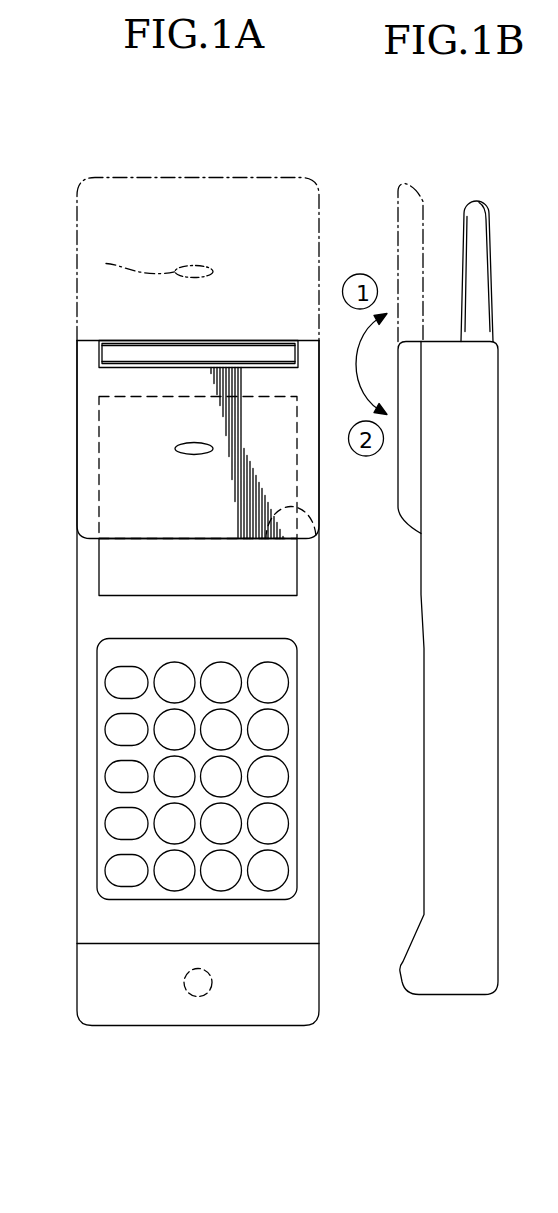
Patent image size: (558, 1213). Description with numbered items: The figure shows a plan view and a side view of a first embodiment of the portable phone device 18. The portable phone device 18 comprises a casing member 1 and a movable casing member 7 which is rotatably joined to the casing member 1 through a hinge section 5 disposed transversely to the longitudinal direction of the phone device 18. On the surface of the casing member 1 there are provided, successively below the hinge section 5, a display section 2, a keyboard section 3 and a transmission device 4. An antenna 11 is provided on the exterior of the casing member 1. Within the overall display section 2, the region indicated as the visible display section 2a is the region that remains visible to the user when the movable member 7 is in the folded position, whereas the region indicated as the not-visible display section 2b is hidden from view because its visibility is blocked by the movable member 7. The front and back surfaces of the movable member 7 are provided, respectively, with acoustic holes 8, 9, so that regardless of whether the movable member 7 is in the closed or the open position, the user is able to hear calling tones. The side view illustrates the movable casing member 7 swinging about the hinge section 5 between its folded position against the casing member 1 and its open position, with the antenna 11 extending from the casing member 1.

In FIG. 1A, the portable phone device 18 is at (93, 167).
In FIG. 1A, the casing member 1 is at (75, 615).
In FIG. 1B, the casing member 1 is at (497, 412).
In FIG. 1A, the movable casing member 7 is at (228, 176).
In FIG. 1B, the movable casing member 7 is at (404, 182).
In FIG. 1A, the acoustic hole 9 is at (105, 262).
In FIG. 1A, the hinge section 5 is at (88, 350).
In FIG. 1A, the acoustic hole 8 is at (175, 447).
In FIG. 1A, the display section 2 is at (90, 556).
In FIG. 1A, the visible display section 2a is at (262, 578).
In FIG. 1A, the not-visible display section 2b is at (322, 527).
In FIG. 1A, the keyboard section 3 is at (107, 702).
In FIG. 1A, the transmission device 4 is at (183, 981).
In FIG. 1B, the antenna 11 is at (484, 226).